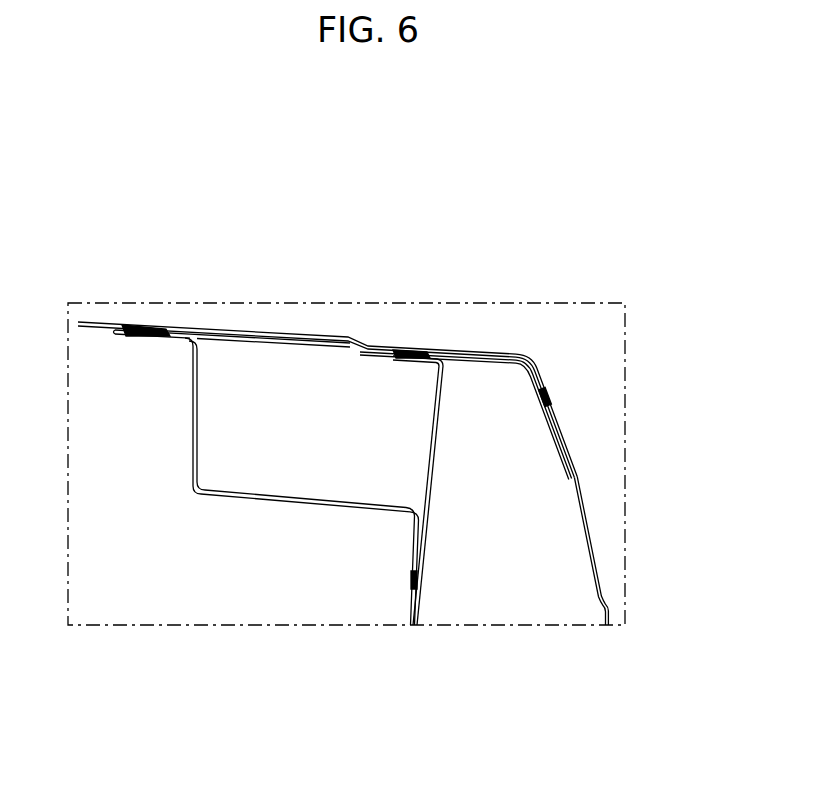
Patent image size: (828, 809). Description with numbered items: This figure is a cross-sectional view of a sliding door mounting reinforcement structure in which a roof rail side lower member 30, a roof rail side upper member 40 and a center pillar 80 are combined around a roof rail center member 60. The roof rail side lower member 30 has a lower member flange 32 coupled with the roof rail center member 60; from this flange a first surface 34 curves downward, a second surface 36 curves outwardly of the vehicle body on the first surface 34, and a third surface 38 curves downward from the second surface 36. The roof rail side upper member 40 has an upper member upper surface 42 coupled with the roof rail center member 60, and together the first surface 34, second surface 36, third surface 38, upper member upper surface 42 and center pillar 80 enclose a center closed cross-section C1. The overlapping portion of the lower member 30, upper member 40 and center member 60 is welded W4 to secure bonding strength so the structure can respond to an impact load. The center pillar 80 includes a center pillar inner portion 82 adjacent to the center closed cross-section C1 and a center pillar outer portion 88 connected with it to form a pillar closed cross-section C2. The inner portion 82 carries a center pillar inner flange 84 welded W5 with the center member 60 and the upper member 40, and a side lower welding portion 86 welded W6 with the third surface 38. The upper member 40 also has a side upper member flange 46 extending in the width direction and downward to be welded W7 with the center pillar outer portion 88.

The roof rail side lower member 30 is at (260, 477).
The lower member flange 32 is at (122, 337).
The first surface 34 is at (193, 466).
The second surface 36 is at (228, 496).
The third surface 38 is at (413, 557).
The roof rail side upper member 40 is at (468, 362).
The upper member upper surface 42 is at (290, 347).
The side upper member flange 46 is at (505, 350).
The roof rail center member 60 is at (243, 330).
The center pillar 80 is at (532, 490).
The center pillar inner portion 82 is at (433, 490).
The center pillar inner flange 84 is at (417, 363).
The side lower welding portion 86 is at (418, 600).
The center pillar outer portion 88 is at (590, 520).
The weld W4 is at (147, 325).
The weld W5 is at (405, 348).
The weld W6 is at (410, 585).
The weld W7 is at (549, 398).
The center closed cross-section C1 is at (326, 371).
The pillar closed cross-section C2 is at (550, 580).